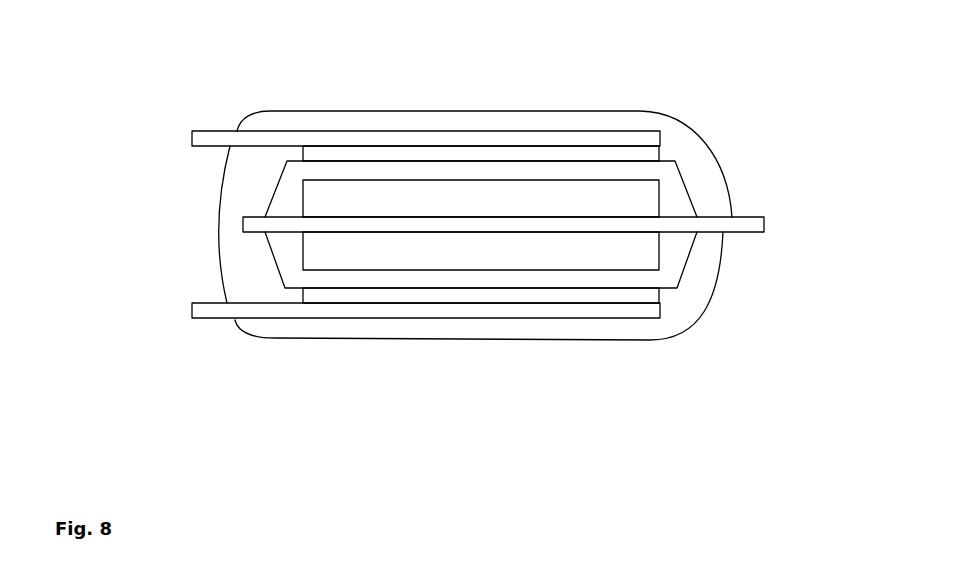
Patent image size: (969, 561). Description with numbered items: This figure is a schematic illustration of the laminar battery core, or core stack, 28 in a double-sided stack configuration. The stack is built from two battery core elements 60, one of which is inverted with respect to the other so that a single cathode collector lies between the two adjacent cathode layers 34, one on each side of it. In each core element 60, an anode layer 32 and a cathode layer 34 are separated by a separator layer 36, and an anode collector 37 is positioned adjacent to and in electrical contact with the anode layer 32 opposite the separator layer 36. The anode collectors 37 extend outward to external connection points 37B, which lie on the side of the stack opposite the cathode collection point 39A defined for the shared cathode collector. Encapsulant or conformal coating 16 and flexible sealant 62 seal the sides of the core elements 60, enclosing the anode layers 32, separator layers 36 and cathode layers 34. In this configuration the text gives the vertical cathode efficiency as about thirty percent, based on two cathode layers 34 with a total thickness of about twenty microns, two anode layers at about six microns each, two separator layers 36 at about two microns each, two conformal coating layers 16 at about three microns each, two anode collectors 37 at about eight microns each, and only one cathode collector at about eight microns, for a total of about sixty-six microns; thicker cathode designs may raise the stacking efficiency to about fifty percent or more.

The battery core 28 is at (130, 73).
The conformal coating 16 is at (342, 118).
The anode collector 37 is at (552, 130).
The external connection point 37B is at (217, 128).
The cathode collection point 39A is at (763, 217).
The anode layer 32 is at (402, 152).
The cathode layer 34 is at (503, 208).
The separator layer 36 is at (287, 272).
The flexible sealant 62 is at (269, 181).
The battery core element 60 is at (735, 130).